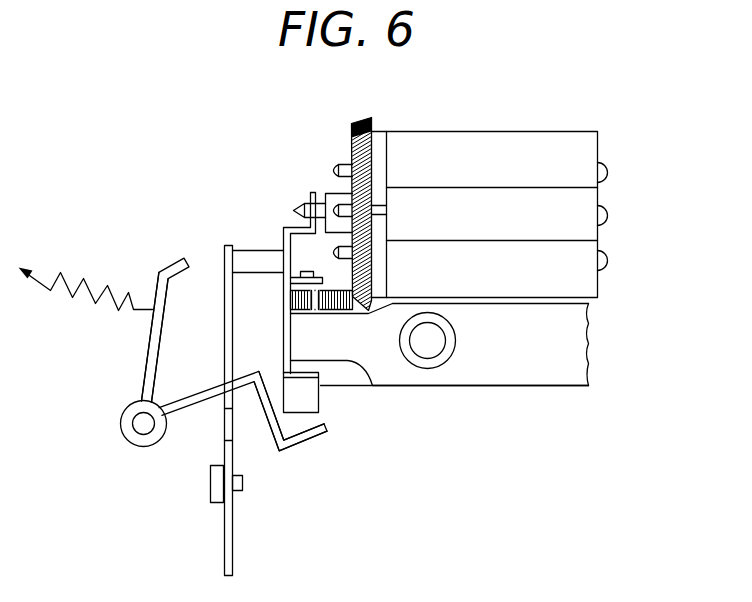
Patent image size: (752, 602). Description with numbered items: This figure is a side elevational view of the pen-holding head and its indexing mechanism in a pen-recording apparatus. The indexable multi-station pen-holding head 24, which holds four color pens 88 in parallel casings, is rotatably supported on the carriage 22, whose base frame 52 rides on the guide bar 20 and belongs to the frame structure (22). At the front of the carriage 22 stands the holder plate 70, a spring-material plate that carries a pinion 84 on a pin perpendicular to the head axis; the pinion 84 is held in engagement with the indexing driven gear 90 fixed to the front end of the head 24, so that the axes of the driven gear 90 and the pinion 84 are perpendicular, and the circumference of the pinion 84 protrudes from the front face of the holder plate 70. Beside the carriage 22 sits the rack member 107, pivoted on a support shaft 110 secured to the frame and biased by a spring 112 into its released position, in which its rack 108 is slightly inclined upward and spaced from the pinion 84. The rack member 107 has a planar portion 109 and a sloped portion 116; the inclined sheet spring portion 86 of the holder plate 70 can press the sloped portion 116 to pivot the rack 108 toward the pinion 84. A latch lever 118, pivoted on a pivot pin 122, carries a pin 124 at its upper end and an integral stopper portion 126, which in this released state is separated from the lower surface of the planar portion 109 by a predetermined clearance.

The guide bar 20 is at (435, 347).
The carriage 22 is at (455, 422).
The pen-holding head 24 is at (518, 118).
The base frame 52 is at (548, 377).
The holder plate 70 is at (284, 228).
The pinion 84 is at (348, 311).
The sheet spring portion 86 is at (312, 397).
The color pen 88 is at (336, 168).
The indexing driven gear 90 is at (360, 120).
The rack member 107 is at (116, 365).
The rack 108 is at (172, 262).
The planar portion 109 is at (194, 382).
The support shaft 110 is at (142, 432).
The spring 112 is at (81, 278).
The sloped portion 116 is at (297, 428).
The lever 118 is at (243, 552).
The pivot pin 122 is at (243, 485).
The pin 124 is at (245, 254).
The stopper portion 126 is at (223, 427).